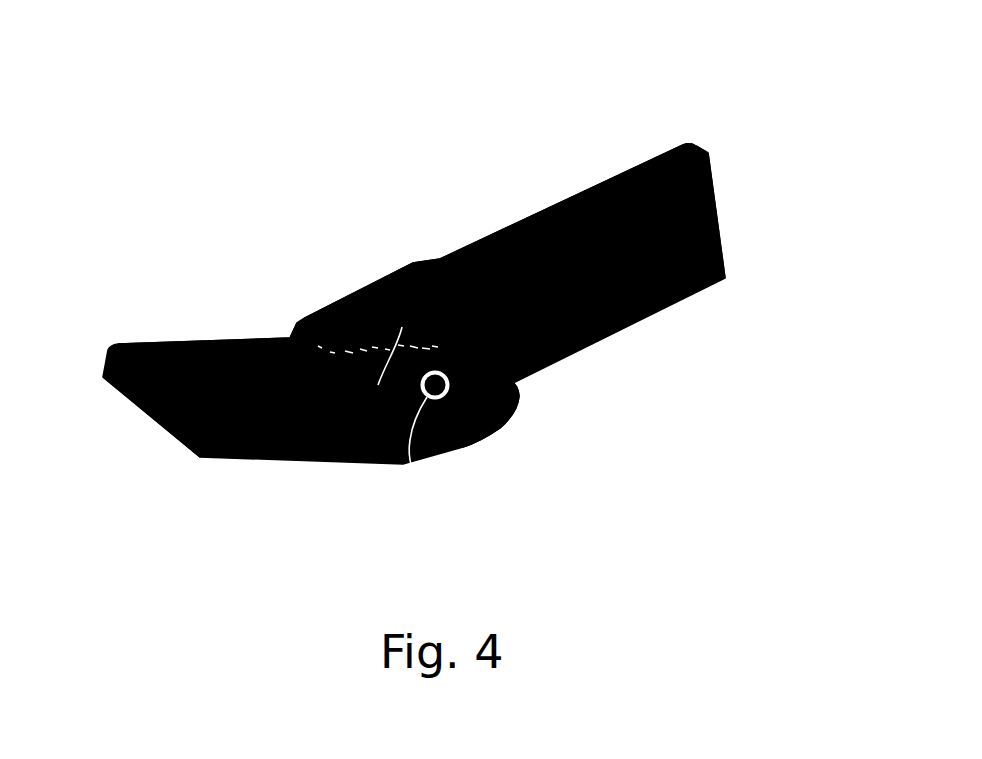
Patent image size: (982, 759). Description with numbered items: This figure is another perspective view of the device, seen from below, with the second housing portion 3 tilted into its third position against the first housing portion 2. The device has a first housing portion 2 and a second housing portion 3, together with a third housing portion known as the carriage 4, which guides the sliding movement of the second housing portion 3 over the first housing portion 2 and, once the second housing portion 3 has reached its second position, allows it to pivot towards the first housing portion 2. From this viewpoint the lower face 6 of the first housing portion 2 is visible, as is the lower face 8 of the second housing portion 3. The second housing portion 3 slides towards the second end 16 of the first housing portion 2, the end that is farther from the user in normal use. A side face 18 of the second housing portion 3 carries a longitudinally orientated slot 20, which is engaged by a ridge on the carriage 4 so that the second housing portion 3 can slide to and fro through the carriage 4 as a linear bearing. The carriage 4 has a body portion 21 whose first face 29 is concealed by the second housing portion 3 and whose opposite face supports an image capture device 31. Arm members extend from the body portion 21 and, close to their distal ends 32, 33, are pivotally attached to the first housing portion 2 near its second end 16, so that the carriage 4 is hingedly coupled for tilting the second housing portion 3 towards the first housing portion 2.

The first housing portion 2 is at (278, 458).
The second housing portion 3 is at (707, 155).
The carriage 4 is at (437, 452).
The lower face 6 is at (210, 460).
The lower face 8 is at (725, 265).
The second end 16 is at (413, 267).
The side face 18 is at (175, 344).
The slot 20 is at (637, 167).
The body portion 21 is at (518, 397).
The first face 29 is at (473, 414).
The image capture device 31 is at (416, 468).
The distal end 32 is at (418, 473).
The distal end 33 is at (305, 325).